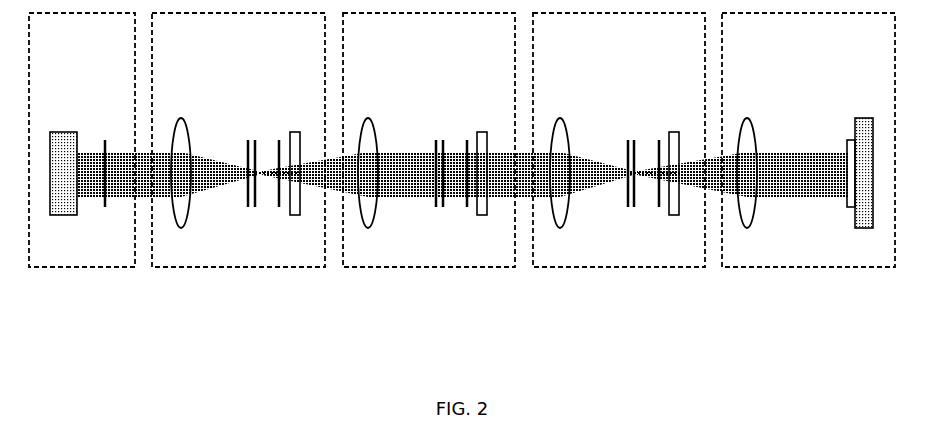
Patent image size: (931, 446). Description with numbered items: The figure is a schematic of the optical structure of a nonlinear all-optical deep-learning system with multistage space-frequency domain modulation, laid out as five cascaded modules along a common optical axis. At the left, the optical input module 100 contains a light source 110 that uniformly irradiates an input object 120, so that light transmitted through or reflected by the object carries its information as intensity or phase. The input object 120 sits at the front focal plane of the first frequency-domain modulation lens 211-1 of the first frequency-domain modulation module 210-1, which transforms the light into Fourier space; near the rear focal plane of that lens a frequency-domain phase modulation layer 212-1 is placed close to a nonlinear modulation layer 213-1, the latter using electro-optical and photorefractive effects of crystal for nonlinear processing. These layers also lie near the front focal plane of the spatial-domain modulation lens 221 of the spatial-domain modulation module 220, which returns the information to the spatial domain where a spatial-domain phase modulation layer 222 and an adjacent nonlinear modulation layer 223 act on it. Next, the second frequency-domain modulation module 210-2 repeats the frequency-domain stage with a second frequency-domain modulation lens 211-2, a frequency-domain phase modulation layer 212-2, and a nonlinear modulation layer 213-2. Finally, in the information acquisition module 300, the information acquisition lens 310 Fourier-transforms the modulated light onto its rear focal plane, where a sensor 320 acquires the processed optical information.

The optical input module 100 is at (82, 140).
The light source 110 is at (63, 189).
The input object 120 is at (108, 188).
The first frequency-domain modulation module 210-1 is at (238, 140).
The first frequency-domain modulation lens 211-1 is at (193, 188).
The frequency-domain phase modulation layer 212-1 is at (265, 191).
The nonlinear modulation layer 213-1 is at (297, 196).
The spatial-domain modulation module 220 is at (429, 140).
The spatial-domain modulation lens 221 is at (375, 187).
The spatial-domain phase modulation layer 222 is at (450, 188).
The nonlinear modulation layer 223 is at (490, 196).
The second frequency-domain modulation module 210-2 is at (619, 140).
The second frequency-domain modulation lens 211-2 is at (573, 187).
The frequency-domain phase modulation layer 212-2 is at (645, 189).
The nonlinear modulation layer 213-2 is at (683, 196).
The information acquisition module 300 is at (808, 140).
The information acquisition lens 310 is at (753, 187).
The sensor 320 is at (865, 189).